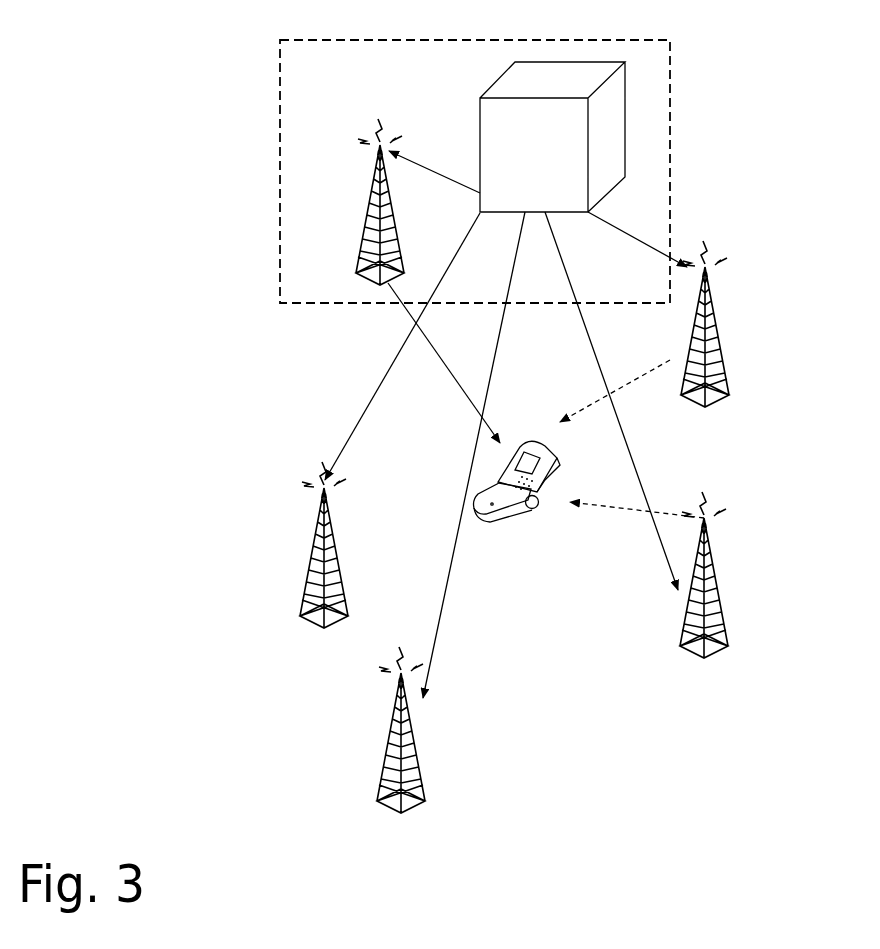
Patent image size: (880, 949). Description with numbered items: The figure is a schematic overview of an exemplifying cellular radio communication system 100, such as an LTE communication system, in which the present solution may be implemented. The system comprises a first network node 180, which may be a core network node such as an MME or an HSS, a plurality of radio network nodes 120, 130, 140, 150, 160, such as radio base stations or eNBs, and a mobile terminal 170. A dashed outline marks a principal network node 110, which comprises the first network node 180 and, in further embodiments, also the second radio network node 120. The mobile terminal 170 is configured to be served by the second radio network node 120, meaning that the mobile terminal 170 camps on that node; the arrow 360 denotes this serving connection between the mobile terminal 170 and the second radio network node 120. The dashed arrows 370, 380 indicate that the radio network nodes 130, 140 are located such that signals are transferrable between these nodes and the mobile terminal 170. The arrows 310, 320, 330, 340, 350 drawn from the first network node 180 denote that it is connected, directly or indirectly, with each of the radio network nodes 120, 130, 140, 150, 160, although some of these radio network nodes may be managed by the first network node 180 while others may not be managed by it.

The cellular radio communication system 100 is at (208, 145).
The principal network node 110 is at (475, 155).
The second radio network node 120 is at (357, 202).
The radio network node 130 is at (744, 326).
The radio network node 140 is at (721, 589).
The radio network node 150 is at (377, 730).
The radio network node 160 is at (294, 556).
The mobile terminal 170 is at (517, 501).
The first network node 180 is at (552, 137).
The arrow 310 is at (434, 167).
The arrow 320 is at (402, 346).
The arrow 330 is at (460, 455).
The arrow 340 is at (611, 401).
The arrow 350 is at (637, 233).
The arrow 360 is at (444, 363).
The arrow 370 is at (615, 380).
The arrow 380 is at (637, 522).